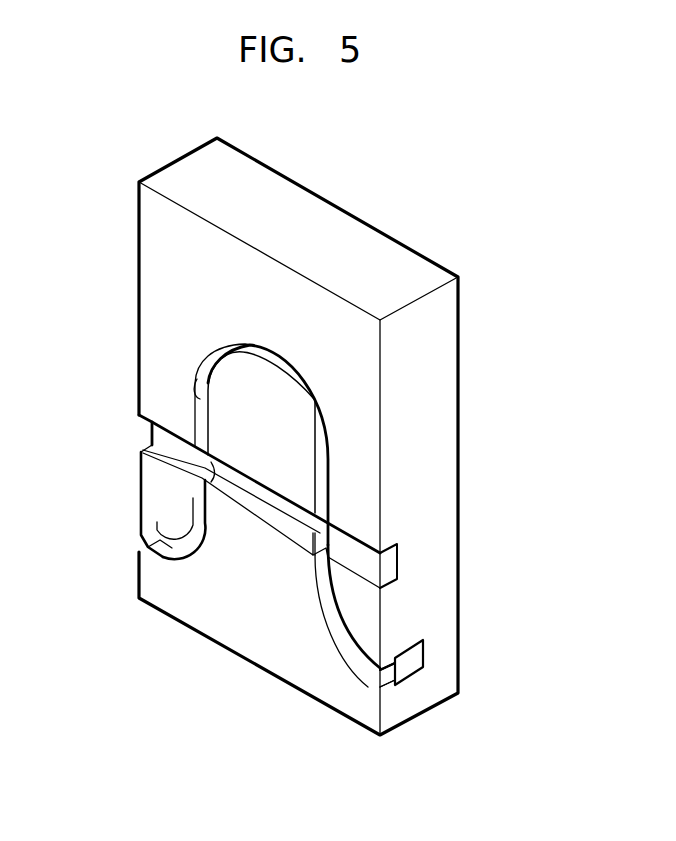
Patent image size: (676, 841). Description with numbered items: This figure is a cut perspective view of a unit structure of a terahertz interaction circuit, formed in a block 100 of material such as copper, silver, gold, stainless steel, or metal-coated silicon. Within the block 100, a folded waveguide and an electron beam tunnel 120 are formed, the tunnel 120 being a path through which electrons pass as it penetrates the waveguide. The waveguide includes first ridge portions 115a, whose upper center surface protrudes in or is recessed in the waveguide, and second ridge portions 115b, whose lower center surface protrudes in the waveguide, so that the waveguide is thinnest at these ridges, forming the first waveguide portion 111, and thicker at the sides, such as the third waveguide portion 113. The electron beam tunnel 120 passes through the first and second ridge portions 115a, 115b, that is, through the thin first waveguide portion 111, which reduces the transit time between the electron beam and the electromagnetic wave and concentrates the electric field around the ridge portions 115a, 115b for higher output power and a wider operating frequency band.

The block 100 is at (447, 408).
The first waveguide portion 111 is at (197, 398).
The third waveguide portion 113 is at (205, 480).
The first ridge portions 115a is at (383, 672).
The second ridge portions 115b is at (387, 684).
The electron beam tunnel 120 is at (395, 562).